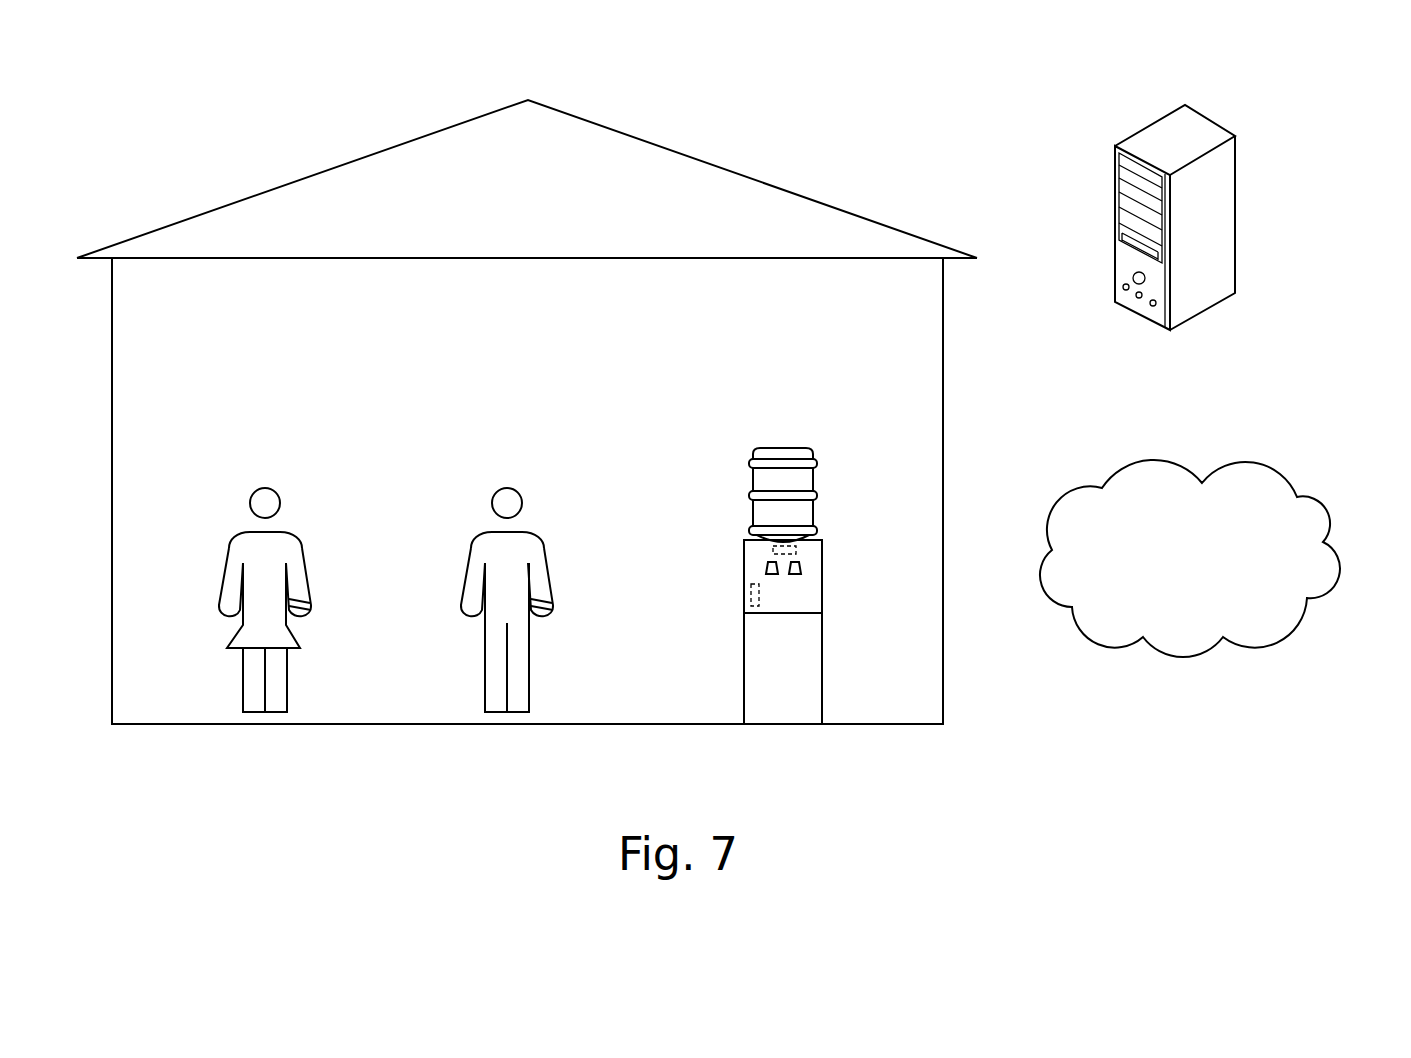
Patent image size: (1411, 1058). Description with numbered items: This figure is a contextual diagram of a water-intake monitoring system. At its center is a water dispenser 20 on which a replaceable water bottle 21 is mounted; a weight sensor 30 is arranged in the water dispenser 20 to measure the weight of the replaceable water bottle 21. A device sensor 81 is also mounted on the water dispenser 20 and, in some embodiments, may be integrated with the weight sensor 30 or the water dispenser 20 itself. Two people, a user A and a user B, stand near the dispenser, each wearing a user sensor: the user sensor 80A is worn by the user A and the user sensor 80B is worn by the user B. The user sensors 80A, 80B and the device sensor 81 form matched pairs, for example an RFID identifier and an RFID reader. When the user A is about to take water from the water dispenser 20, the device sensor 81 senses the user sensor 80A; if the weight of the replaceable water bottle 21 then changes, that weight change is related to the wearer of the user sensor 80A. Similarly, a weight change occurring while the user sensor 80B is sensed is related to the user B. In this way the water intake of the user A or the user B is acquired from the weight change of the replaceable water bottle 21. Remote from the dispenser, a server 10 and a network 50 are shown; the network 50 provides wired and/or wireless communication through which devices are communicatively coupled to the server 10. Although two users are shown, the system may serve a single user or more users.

The server 10 is at (1213, 120).
The water dispenser 20 is at (744, 582).
The replaceable water bottle 21 is at (785, 447).
The weight sensor 30 is at (785, 545).
The network 50 is at (1262, 463).
The user sensor 80A is at (552, 604).
The user sensor 80B is at (310, 604).
The device sensor 81 is at (743, 600).
The user A is at (506, 487).
The user B is at (264, 487).